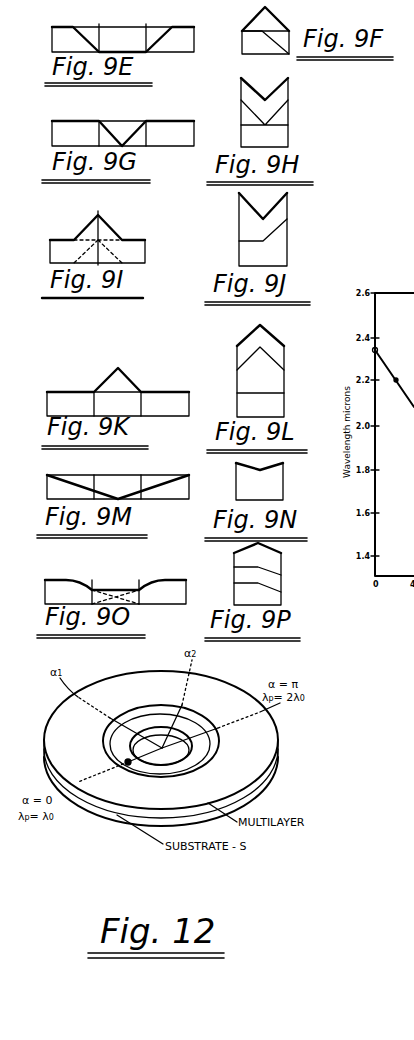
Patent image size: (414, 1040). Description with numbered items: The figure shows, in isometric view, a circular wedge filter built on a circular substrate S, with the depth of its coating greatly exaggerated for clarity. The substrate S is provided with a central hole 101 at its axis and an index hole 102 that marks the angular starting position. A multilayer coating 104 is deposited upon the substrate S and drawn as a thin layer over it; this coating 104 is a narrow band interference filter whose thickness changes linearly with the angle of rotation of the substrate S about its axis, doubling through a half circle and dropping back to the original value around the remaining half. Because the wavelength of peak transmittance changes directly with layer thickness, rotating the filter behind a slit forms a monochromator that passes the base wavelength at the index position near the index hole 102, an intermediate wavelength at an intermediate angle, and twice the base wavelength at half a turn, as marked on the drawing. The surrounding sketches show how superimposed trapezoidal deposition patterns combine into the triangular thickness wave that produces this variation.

The central hole 101 is at (218, 740).
The index hole 102 is at (128, 762).
The multilayer coating 104 is at (102, 800).